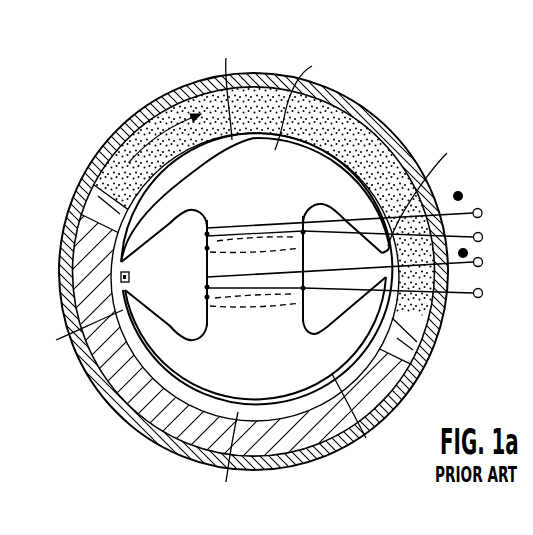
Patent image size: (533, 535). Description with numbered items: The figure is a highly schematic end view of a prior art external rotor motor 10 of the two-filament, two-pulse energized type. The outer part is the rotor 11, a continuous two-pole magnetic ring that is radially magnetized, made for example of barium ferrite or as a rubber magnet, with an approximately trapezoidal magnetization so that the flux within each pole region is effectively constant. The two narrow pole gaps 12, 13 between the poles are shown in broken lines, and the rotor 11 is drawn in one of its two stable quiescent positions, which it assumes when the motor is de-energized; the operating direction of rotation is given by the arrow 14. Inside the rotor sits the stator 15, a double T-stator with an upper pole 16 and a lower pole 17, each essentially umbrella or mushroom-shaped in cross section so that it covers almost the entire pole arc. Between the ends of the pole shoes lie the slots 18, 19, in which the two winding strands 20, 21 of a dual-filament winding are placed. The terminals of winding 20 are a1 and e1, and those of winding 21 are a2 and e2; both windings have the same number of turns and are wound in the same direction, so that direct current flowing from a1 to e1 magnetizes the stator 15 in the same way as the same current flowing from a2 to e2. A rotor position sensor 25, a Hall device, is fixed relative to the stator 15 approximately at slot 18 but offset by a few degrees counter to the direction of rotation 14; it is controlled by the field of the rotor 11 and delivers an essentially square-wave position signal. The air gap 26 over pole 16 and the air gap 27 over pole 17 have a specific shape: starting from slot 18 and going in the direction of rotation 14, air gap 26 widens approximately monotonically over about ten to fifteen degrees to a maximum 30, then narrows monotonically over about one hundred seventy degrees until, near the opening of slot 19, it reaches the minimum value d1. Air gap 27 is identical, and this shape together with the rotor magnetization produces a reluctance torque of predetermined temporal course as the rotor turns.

The external rotor motor 10 is at (104, 116).
The rotor 11 is at (357, 106).
The pole gap 12 is at (110, 197).
The pole gap 13 is at (430, 351).
The direction of rotation 14 is at (157, 123).
The stator 15 is at (243, 200).
The upper pole 16 is at (304, 97).
The lower pole 17 is at (366, 438).
The slot 18 is at (189, 316).
The slot 19 is at (322, 306).
The winding strand 20 is at (258, 230).
The winding strand 21 is at (249, 283).
The rotor position sensor 25 is at (129, 277).
The air gap 26 is at (223, 87).
The air gap 27 is at (229, 460).
The maximum of the air gap 30 is at (96, 164).
The terminal a1 is at (360, 214).
The terminal e1 is at (408, 237).
The terminal a2 is at (360, 264).
The terminal e2 is at (408, 293).
The minimum value of the air gap d1 is at (248, 253).